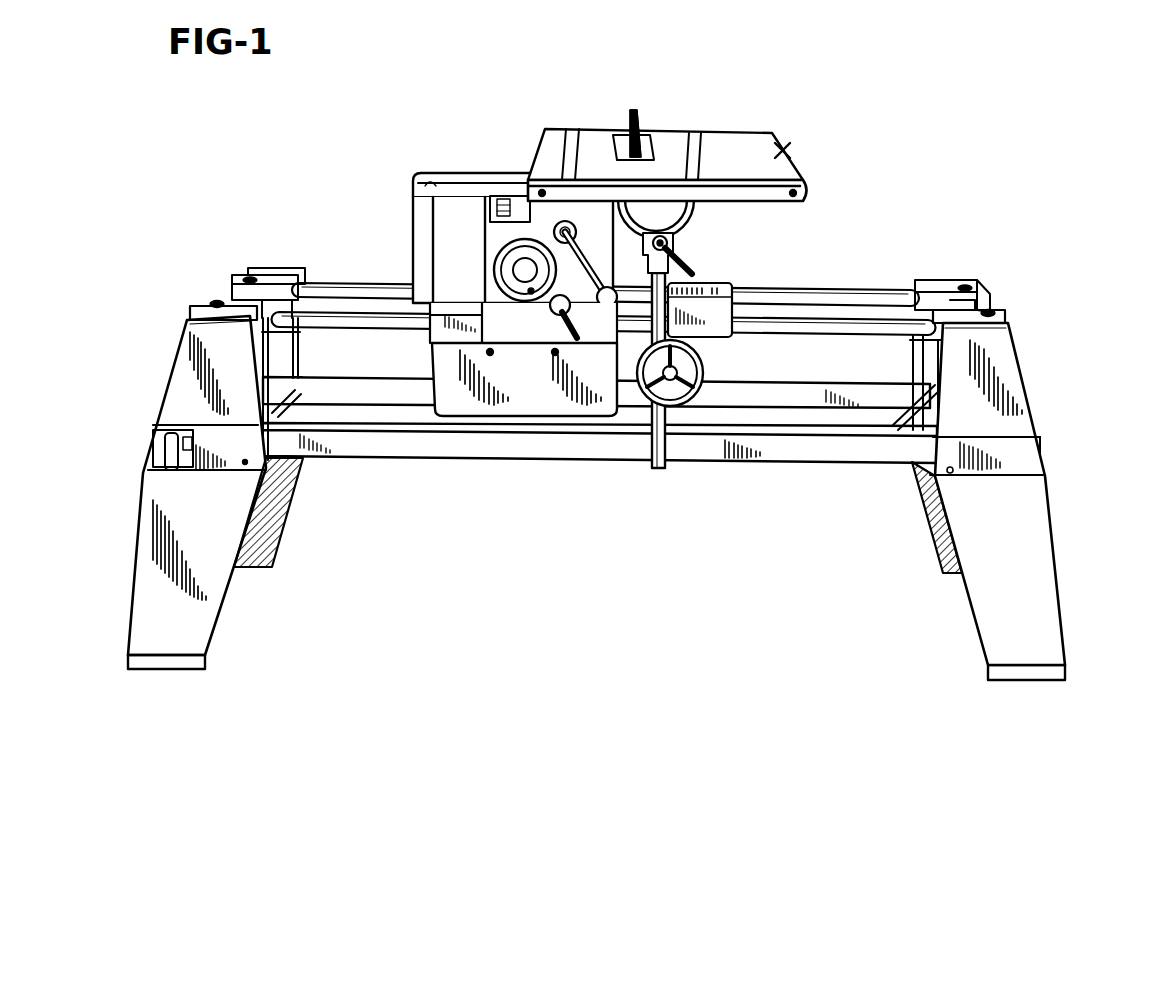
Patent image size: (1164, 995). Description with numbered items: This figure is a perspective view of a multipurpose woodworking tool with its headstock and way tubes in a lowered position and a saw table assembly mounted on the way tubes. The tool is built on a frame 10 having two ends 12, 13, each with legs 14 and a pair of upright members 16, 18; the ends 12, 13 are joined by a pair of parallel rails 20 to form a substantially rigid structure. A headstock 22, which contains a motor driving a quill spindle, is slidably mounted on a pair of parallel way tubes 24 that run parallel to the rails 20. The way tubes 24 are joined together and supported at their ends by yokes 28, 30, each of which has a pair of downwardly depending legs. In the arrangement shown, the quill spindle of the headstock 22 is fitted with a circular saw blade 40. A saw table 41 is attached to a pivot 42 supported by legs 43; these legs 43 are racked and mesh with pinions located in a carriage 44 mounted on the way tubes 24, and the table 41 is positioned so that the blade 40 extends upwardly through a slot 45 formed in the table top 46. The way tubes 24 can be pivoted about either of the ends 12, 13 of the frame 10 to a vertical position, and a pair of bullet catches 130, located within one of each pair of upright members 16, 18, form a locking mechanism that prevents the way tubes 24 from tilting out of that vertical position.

The frame 10 is at (997, 457).
The end 12 is at (601, 452).
The end 13 is at (985, 457).
The legs 14 is at (210, 618).
The upright members 16 is at (183, 372).
The upright members 18 is at (1015, 355).
The rails 20 is at (778, 395).
The headstock 22 is at (440, 236).
The way tubes 24 is at (846, 322).
The yoke 28 is at (216, 298).
The yoke 30 is at (998, 296).
The circular saw blade 40 is at (636, 132).
The saw table 41 is at (790, 148).
The pivot 42 is at (688, 215).
The legs 43 is at (685, 278).
The carriage 44 is at (720, 343).
The slot 45 is at (630, 126).
The table top 46 is at (697, 137).
The bullet catches 130 is at (165, 428).